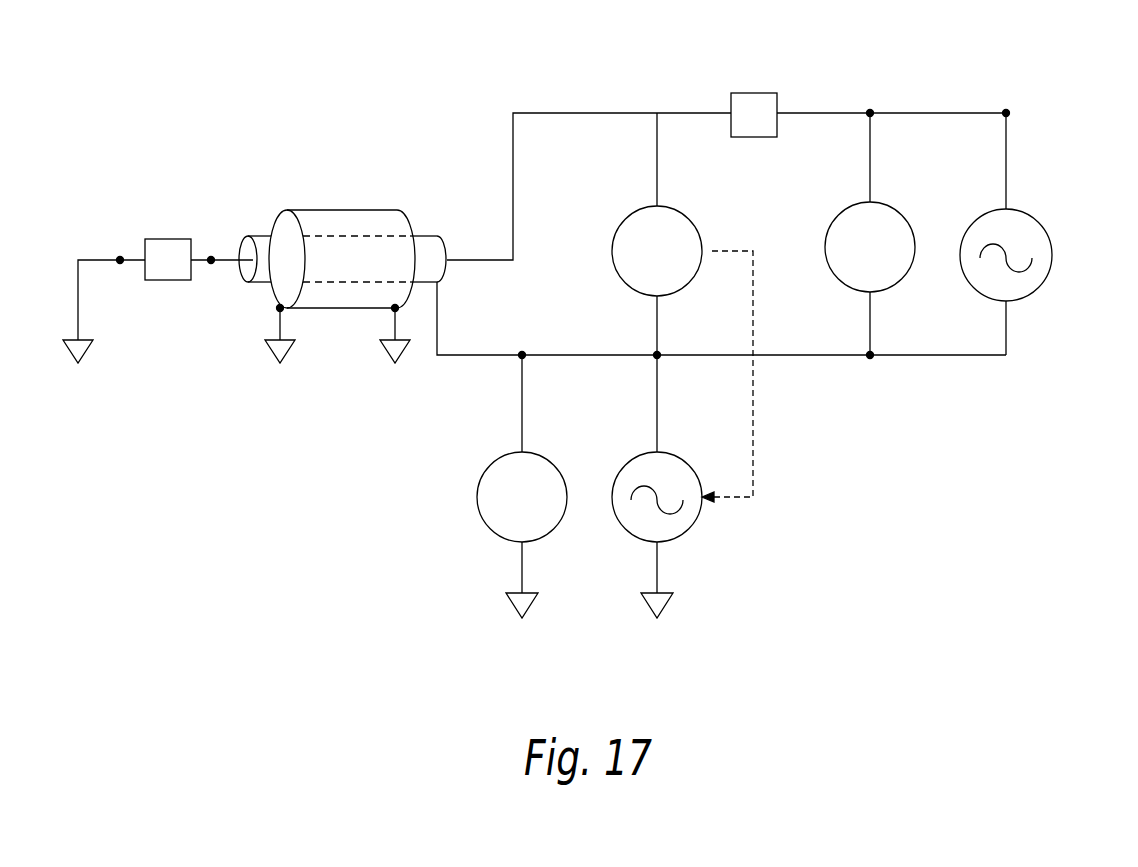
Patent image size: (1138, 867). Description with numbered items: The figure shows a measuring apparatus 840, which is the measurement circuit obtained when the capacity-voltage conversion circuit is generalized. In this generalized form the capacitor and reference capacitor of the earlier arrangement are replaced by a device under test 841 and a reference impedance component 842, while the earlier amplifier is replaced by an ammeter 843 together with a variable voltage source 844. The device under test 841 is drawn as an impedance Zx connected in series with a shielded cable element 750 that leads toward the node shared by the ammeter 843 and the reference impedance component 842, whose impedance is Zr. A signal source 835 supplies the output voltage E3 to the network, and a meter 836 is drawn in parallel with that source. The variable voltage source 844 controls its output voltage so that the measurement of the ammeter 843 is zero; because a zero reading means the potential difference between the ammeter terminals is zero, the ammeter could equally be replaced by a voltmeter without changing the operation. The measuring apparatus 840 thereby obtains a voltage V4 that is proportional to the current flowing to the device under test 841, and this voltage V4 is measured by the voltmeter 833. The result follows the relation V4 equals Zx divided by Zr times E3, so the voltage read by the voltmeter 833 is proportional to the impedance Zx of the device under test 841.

The measuring apparatus 840 is at (166, 49).
The device under test 841 is at (163, 239).
The coaxial cable / probe 750 is at (342, 210).
The ammeter 843 is at (633, 207).
The reference impedance component 842 is at (753, 93).
The voltmeter Ve 836 is at (893, 285).
The signal source 835 is at (1022, 212).
The voltmeter 833 is at (483, 515).
The variable voltage source 844 is at (693, 526).